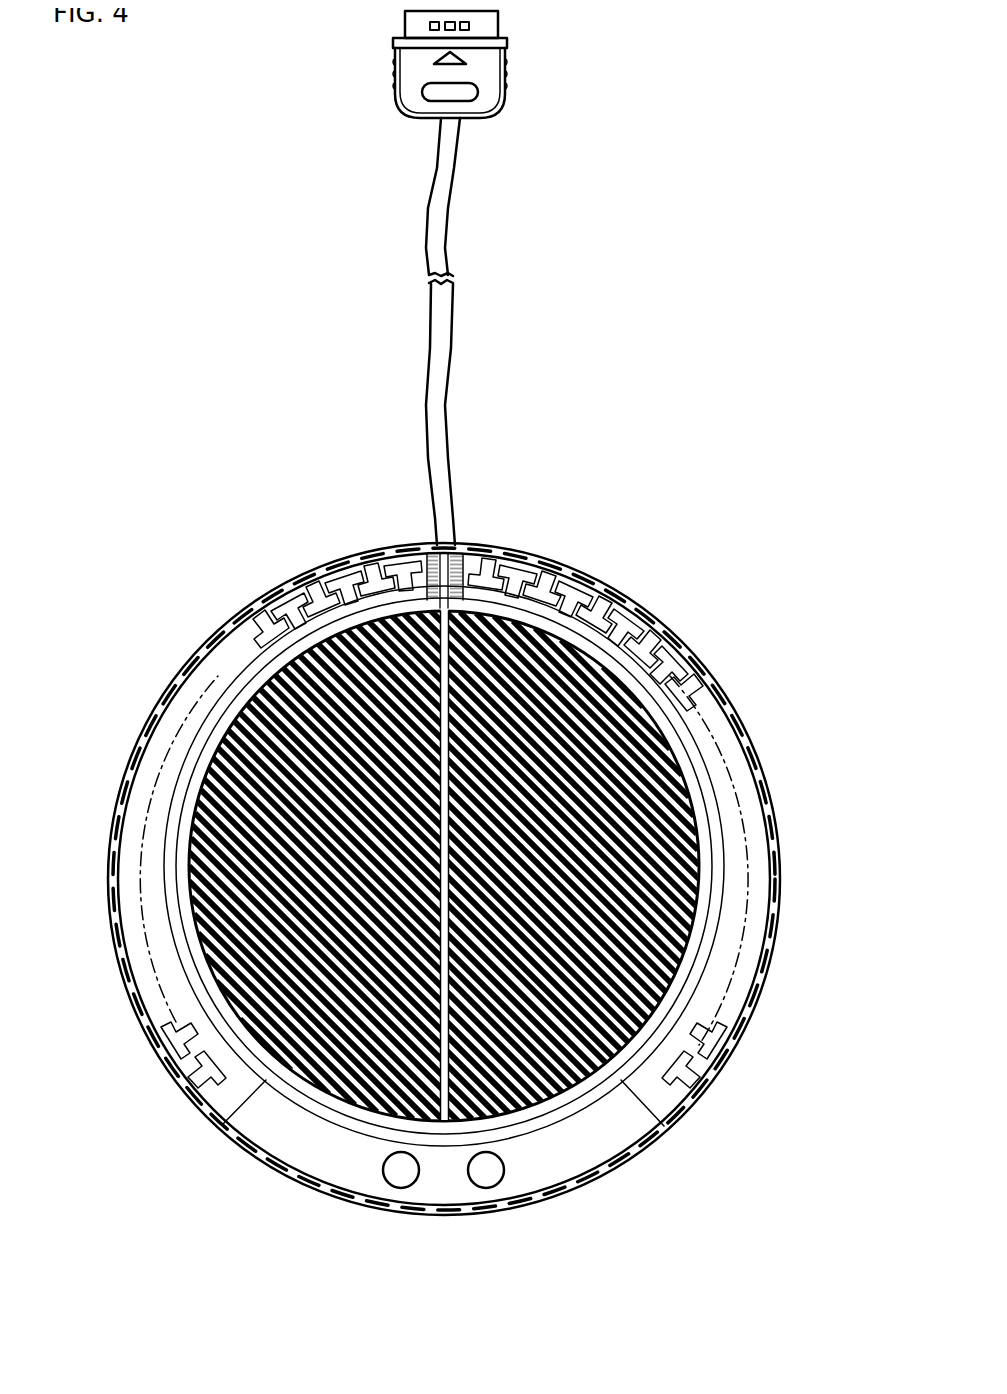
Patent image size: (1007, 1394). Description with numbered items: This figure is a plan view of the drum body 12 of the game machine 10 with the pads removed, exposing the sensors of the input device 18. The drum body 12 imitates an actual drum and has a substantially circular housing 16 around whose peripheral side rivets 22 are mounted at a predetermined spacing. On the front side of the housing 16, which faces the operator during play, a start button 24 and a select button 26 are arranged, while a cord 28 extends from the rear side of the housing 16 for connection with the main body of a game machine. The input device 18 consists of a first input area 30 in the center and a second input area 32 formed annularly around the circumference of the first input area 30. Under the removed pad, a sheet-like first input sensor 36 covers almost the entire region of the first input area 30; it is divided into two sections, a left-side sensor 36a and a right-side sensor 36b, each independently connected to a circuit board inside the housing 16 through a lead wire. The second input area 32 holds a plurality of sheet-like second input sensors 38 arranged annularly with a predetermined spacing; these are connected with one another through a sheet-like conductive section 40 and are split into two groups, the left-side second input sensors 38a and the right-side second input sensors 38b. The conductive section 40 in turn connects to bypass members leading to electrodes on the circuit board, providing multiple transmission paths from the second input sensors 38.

The game machine 10 is at (572, 466).
The drum body 12 is at (656, 594).
The housing 16 is at (775, 822).
The input device 18 is at (787, 572).
The rivets 22 is at (762, 962).
The start button 24 is at (478, 1166).
The select button 26 is at (393, 1166).
The cord 28 is at (425, 397).
The first input area 30 is at (667, 633).
The second input area 32 is at (700, 663).
The first input sensor 36 is at (215, 1210).
The left-side sensor 36a is at (205, 993).
The right-side sensor 36b is at (437, 1112).
The second input sensors 38 is at (260, 585).
The left-side second input sensors 38a is at (343, 571).
The right-side second input sensors 38b is at (537, 569).
The conductive section 40 is at (300, 578).